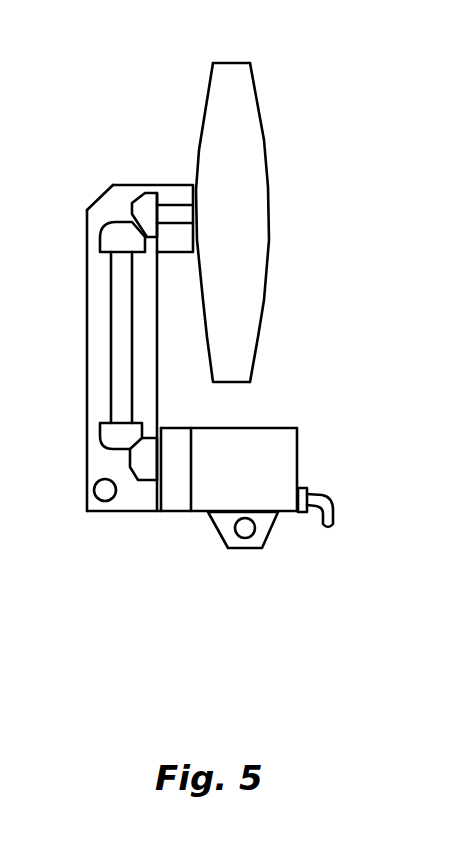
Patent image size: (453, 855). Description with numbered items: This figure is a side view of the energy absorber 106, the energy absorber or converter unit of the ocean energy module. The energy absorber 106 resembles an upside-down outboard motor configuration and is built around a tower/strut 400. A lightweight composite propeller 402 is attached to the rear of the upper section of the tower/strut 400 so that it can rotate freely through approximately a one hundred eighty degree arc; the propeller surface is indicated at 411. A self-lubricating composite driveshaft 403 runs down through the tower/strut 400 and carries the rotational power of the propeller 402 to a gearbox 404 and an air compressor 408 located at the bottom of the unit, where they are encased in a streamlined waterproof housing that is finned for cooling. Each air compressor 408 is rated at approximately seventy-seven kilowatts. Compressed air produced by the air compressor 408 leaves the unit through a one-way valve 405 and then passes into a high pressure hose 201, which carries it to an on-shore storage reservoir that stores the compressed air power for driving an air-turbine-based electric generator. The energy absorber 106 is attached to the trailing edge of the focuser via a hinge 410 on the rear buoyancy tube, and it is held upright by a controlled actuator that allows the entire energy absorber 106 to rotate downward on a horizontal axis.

The propeller 402 is at (233, 90).
The lens surface 411 is at (256, 174).
The driveshaft 403 is at (122, 261).
The tower/strut 400 is at (97, 310).
The energy absorber 106 is at (87, 405).
The hinge 410 is at (103, 488).
The gearbox 404 is at (180, 497).
The air compressor 408 is at (283, 442).
The one-way valve 405 is at (302, 490).
The high pressure hose 201 is at (330, 498).